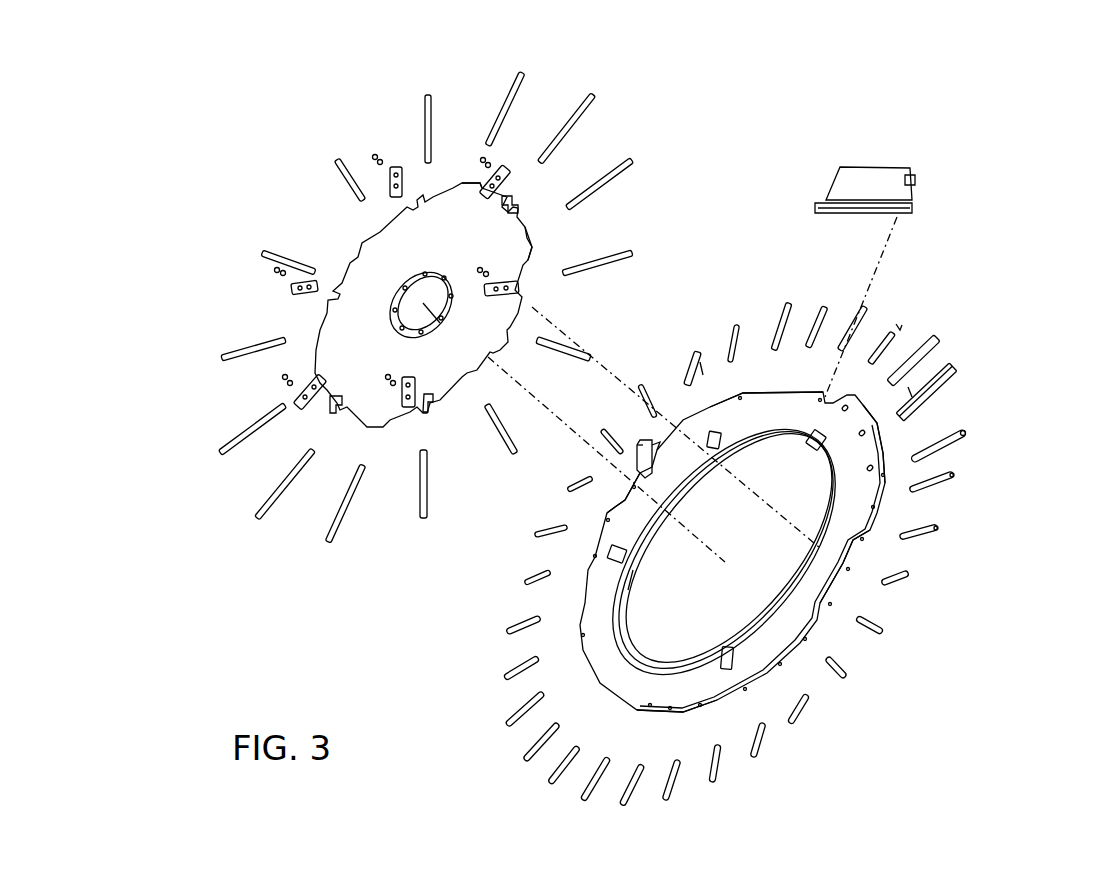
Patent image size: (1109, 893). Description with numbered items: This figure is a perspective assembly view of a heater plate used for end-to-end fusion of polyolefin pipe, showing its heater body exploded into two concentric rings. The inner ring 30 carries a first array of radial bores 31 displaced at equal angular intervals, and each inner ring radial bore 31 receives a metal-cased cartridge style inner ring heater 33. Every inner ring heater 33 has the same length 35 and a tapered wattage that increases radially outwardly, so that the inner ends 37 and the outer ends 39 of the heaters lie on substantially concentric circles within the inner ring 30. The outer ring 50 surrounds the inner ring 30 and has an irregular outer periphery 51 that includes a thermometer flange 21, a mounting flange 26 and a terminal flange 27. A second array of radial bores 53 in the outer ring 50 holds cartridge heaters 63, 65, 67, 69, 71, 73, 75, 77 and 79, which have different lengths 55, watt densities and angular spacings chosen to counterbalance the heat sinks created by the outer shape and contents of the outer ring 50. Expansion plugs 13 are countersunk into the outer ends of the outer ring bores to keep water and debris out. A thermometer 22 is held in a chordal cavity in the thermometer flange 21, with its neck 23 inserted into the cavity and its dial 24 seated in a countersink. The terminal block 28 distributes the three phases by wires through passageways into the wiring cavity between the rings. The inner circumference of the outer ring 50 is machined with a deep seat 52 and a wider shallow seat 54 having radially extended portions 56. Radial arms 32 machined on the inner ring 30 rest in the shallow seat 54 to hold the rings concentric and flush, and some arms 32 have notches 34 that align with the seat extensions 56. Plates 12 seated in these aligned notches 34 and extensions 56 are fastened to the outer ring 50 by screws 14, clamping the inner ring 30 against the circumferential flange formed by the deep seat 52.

The plate 12 is at (397, 168).
The expansion plug 13 is at (898, 327).
The screw 14 is at (374, 156).
The thermometer flange 21 is at (605, 523).
The thermometer 22 is at (645, 440).
The neck 23 is at (650, 450).
The dial 24 is at (643, 445).
The mounting flange 26 is at (887, 447).
The terminal flange 27 is at (770, 398).
The terminal block 28 is at (895, 165).
The inner ring 30 is at (342, 328).
The inner ring radial bore 31 is at (427, 279).
The radial arm 32 is at (470, 190).
The inner ring heater 33 is at (343, 177).
The notch 34 is at (520, 198).
The length 35 is at (590, 95).
The inner end 37 is at (281, 254).
The outer end 39 is at (522, 73).
The outer ring 50 is at (604, 660).
The outer periphery 51 is at (675, 713).
The deep seat 52 is at (812, 445).
The outer ring radial bore 53 is at (820, 603).
The shallow seat 54 is at (633, 570).
The length 55 is at (700, 370).
The radially extended portion 56 is at (820, 445).
The outer ring heater 63 is at (508, 668).
The outer ring heater 65 is at (507, 620).
The outer ring heater 67 is at (900, 585).
The outer ring heater 69 is at (568, 483).
The outer ring heater 71 is at (530, 745).
The outer ring heater 73 is at (815, 307).
The outer ring heater 75 is at (535, 527).
The outer ring heater 77 is at (778, 303).
The outer ring heater 79 is at (937, 340).